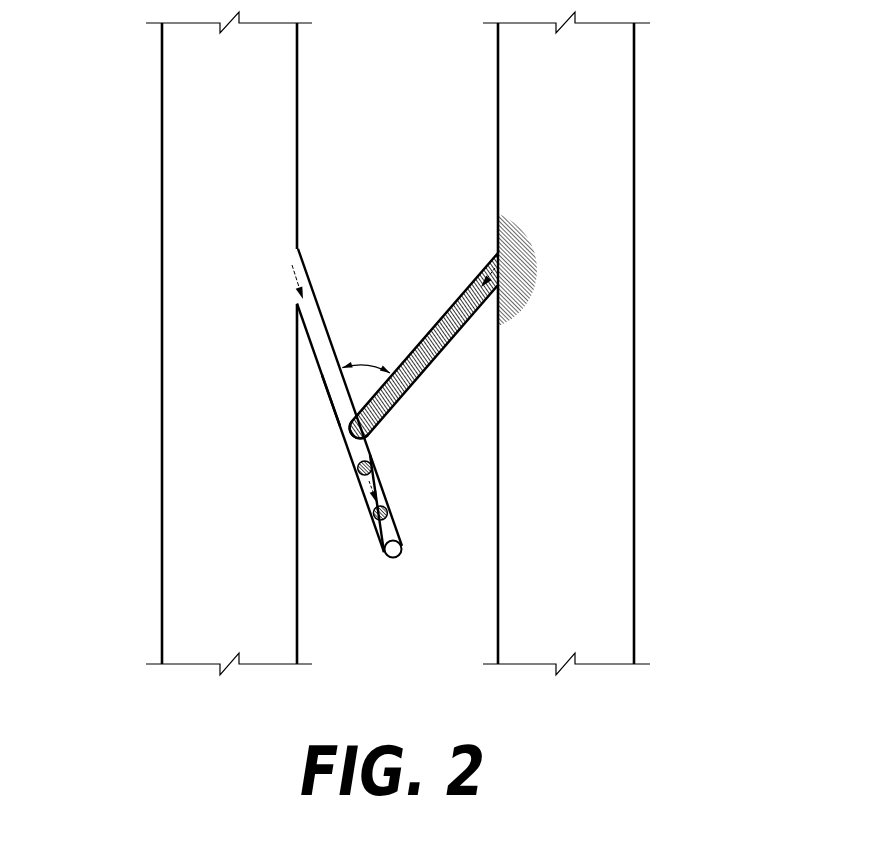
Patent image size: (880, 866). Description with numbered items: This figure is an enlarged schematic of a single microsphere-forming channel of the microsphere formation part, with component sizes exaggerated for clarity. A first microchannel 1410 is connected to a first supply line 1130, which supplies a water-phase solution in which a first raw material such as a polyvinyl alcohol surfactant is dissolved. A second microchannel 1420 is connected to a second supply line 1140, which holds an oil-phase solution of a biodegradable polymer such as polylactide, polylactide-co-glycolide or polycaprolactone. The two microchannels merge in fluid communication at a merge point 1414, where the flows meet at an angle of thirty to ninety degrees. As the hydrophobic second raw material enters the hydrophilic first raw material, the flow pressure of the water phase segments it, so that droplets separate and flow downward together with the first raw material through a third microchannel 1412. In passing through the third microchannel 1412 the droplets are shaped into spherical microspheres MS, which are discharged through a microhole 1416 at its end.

The first supply line 1130 is at (168, 125).
The second supply line 1140 is at (627, 125).
The first microchannel 1410 is at (317, 326).
The third microchannel 1412 is at (379, 528).
The merge point 1414 is at (370, 437).
The microhole 1416 is at (395, 557).
The second microchannel 1420 is at (445, 322).
The magnetic sensor MS is at (388, 513).